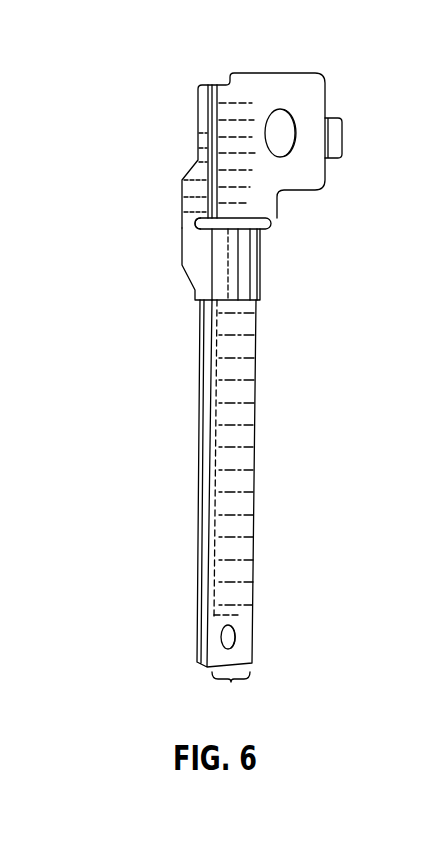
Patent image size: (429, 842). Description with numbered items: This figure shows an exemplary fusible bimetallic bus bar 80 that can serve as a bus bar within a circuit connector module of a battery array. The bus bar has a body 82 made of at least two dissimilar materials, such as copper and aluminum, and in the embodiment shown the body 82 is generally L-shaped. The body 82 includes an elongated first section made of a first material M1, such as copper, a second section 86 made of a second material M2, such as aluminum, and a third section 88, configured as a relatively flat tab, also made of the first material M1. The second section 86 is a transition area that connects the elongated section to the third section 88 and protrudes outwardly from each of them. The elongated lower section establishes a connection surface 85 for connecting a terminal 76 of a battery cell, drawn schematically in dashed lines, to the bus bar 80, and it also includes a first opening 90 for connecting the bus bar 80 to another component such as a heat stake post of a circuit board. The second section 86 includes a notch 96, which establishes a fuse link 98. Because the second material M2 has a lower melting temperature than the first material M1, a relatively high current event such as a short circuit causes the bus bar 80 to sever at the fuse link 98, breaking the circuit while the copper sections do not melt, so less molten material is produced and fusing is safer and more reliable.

The fusible bimetallic bus bar 80 is at (138, 135).
The third section 88 is at (312, 98).
The first material M1 is at (276, 93).
The second material M2 is at (190, 106).
The notch 96 is at (262, 226).
The fuse link 98 is at (187, 232).
The second section 86 is at (172, 265).
The body 82 is at (262, 346).
The connection surface 85 is at (237, 441).
The terminal 76 is at (240, 613).
The first opening 90 is at (236, 639).